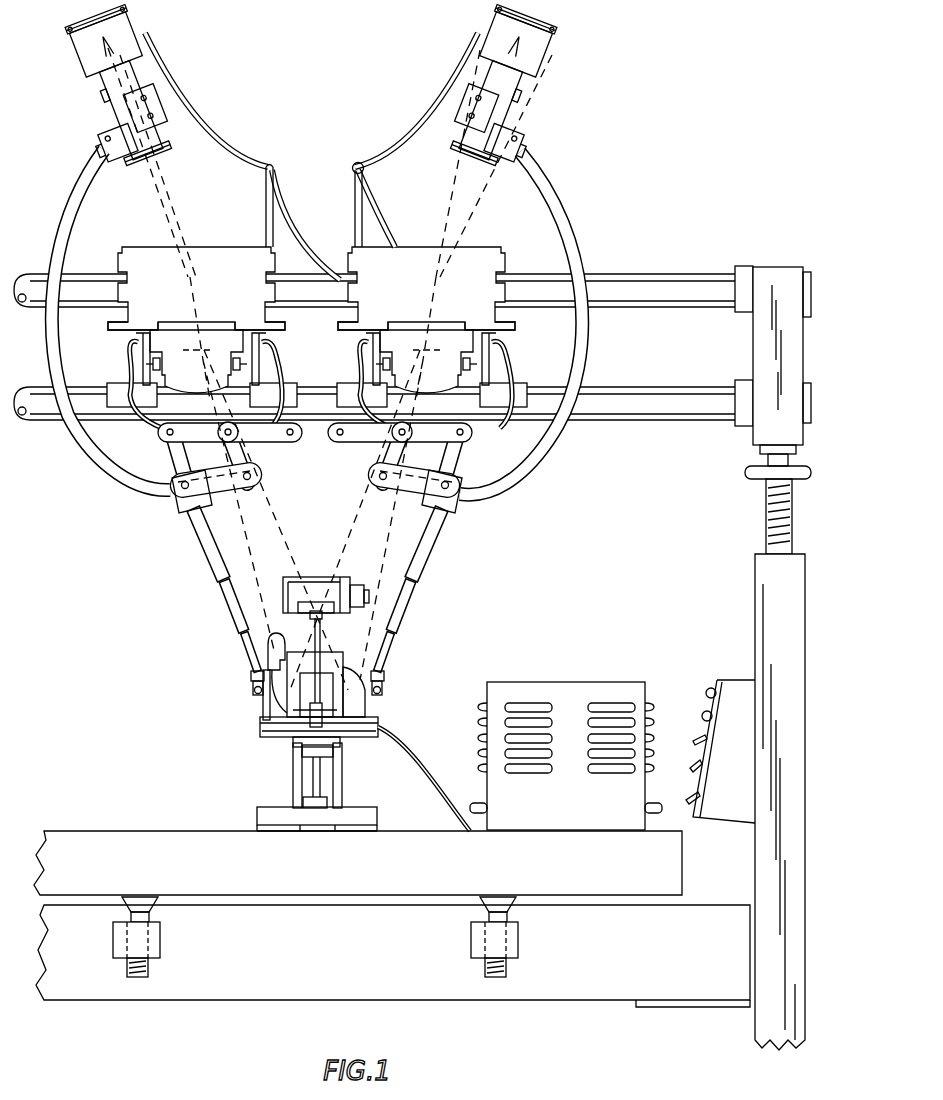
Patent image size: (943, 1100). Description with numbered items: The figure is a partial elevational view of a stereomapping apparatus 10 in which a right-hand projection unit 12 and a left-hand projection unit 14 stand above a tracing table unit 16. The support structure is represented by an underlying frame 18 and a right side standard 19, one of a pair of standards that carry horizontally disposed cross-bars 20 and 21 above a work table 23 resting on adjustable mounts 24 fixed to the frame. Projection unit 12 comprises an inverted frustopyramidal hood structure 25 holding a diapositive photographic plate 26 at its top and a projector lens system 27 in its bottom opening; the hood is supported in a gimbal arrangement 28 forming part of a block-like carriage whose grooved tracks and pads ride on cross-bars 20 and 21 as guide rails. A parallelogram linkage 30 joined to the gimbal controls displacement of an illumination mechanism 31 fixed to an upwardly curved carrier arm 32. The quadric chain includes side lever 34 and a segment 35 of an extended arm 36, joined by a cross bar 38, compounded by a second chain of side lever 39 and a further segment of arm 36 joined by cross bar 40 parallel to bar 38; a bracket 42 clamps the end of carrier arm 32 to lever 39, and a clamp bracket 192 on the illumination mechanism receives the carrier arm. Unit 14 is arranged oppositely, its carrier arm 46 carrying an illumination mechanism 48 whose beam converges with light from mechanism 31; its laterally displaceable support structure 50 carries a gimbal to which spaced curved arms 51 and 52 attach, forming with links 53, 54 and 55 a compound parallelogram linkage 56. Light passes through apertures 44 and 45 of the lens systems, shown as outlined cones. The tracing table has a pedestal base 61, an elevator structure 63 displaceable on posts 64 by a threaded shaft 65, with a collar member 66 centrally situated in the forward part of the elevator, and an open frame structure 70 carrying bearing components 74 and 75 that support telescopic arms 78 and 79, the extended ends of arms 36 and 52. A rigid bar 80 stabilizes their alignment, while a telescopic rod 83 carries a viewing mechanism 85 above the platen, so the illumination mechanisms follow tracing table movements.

The stereomapping apparatus 10 is at (318, 128).
The right-hand projection unit 12 is at (429, 305).
The left-hand projection unit 14 is at (207, 305).
The tracing table unit 16 is at (317, 693).
The frame 18 is at (359, 986).
The right side standard 19 is at (758, 600).
The cross-bar 20 is at (656, 283).
The cross-bar 21 is at (654, 388).
The work table 23 is at (112, 831).
The adjustable mounts 24 is at (150, 912).
The hood structure 25 is at (503, 322).
The diapositive photographic plate 26 is at (497, 262).
The projector lens system 27 is at (412, 385).
The gimbal arrangement 28 is at (386, 358).
The parallelogram linkage 30 is at (376, 478).
The illumination mechanism 31 is at (512, 100).
The carrier arm 32 is at (567, 199).
The side lever 34 is at (354, 366).
The segment 35 is at (501, 368).
The extended arm 36 is at (458, 462).
The cross bar 38 is at (436, 438).
The side lever 39 is at (384, 453).
The cross bar 40 is at (398, 500).
The bracket 42 is at (452, 503).
The aperture 44 is at (428, 357).
The aperture 45 is at (201, 352).
The carrier arm 46 is at (72, 197).
The illumination mechanism 48 is at (82, 55).
The support structure 50 is at (271, 323).
The curved arm 51 is at (277, 375).
The curved arm 52 is at (197, 538).
The link 53 is at (201, 442).
The link 54 is at (249, 477).
The link 55 is at (218, 492).
The compound parallelogram linkage 56 is at (244, 448).
The pedestal base 61 is at (371, 812).
The elevator structure 63 is at (302, 750).
The posts 64 is at (342, 760).
The threaded shaft 65 is at (323, 779).
The bobbin 66 is at (274, 635).
The open frame structure 70 is at (383, 724).
The bearing component 74 is at (383, 697).
The bearing component 75 is at (252, 698).
The telescopic arm 78 is at (400, 632).
The telescopic arm 79 is at (236, 626).
The rigid bar 80 is at (262, 740).
The telescopic rod 83 is at (321, 640).
The viewing mechanism 85 is at (304, 581).
The clamp bracket 192 is at (513, 160).